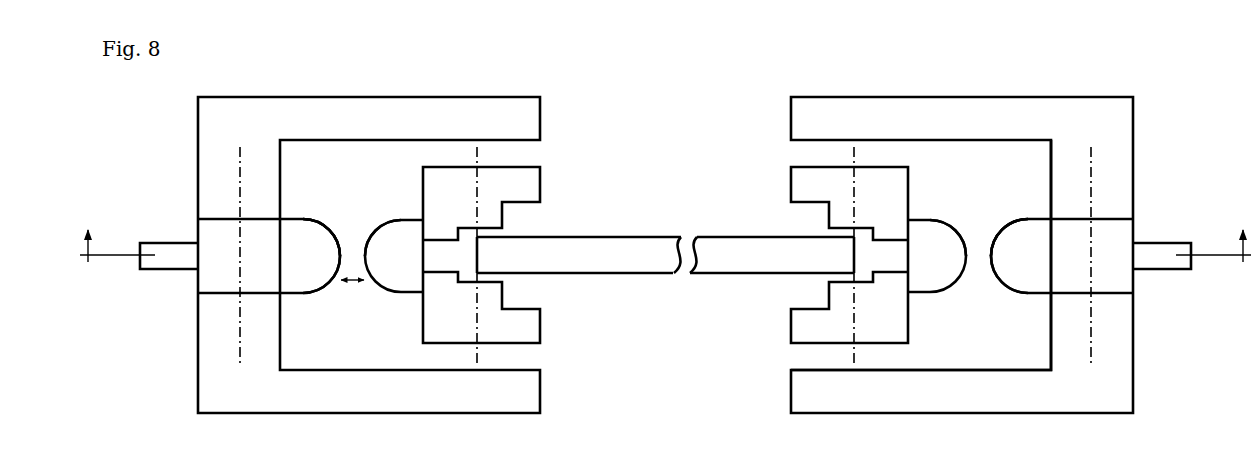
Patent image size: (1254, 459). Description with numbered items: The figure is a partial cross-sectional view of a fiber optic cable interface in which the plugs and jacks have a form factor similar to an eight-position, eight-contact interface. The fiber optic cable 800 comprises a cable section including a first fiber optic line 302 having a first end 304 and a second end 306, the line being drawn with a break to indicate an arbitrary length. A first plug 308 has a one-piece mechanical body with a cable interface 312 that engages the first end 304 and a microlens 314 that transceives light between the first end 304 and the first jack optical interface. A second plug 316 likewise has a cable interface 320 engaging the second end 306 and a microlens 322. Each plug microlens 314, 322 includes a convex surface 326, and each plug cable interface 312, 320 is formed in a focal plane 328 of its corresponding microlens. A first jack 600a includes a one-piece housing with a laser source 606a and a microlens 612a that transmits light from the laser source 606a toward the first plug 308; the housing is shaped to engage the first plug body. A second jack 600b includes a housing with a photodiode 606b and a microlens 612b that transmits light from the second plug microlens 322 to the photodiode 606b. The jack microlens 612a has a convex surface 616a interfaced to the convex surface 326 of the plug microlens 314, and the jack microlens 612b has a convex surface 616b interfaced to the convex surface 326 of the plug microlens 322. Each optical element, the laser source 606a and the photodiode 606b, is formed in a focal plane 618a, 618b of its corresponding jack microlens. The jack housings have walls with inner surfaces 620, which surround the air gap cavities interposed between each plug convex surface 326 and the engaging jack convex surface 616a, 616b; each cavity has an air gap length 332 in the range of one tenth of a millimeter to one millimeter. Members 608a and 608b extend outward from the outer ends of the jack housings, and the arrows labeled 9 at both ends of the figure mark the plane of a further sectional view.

The fiber optic cable 800 is at (1055, 57).
The first jack 600a is at (440, 83).
The second jack 600b is at (921, 85).
The section line for FIG. 9 is at (665, 231).
The first fiber port 608a is at (172, 242).
The second fiber port 608b is at (1148, 242).
The laser source 606a is at (258, 283).
The photodiode 606b is at (1076, 244).
The first jack microlens 612a is at (337, 268).
The second jack microlens 612b is at (997, 266).
The convex surface of first jack microlens 616a is at (319, 219).
The convex surface of second jack microlens 616b is at (993, 227).
The focal plane of first jack microlens 618a is at (237, 330).
The focal plane of second jack microlens 618b is at (1093, 360).
The inner surfaces of jack housing walls 620 is at (969, 366).
The first plug microlens 314 is at (418, 268).
The second plug microlens 322 is at (955, 266).
The convex surface of plug microlens 326 is at (369, 225).
The air gap length 332 is at (350, 286).
The first plug 308 is at (562, 153).
The second plug 316 is at (746, 153).
The focal plane of lens 328 is at (478, 301).
The cable interface of first plug 312 is at (471, 252).
The cable interface of second plug 320 is at (860, 252).
The first end of fiber optic line 304 is at (498, 266).
The second end of fiber optic line 306 is at (791, 266).
The first fiber optic line 302 is at (650, 237).